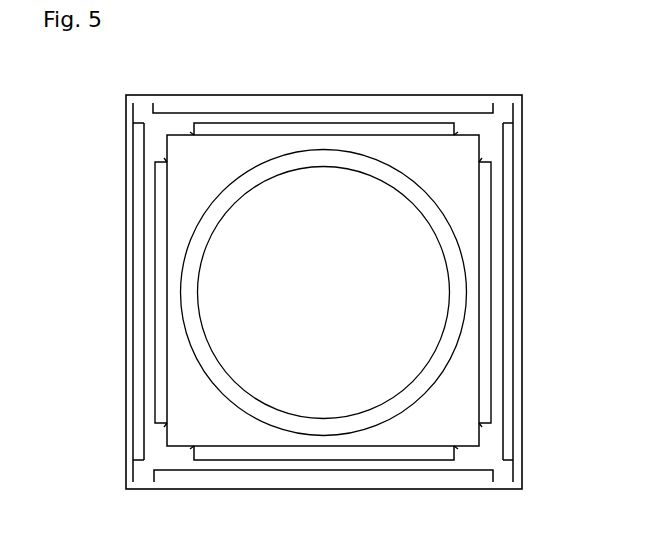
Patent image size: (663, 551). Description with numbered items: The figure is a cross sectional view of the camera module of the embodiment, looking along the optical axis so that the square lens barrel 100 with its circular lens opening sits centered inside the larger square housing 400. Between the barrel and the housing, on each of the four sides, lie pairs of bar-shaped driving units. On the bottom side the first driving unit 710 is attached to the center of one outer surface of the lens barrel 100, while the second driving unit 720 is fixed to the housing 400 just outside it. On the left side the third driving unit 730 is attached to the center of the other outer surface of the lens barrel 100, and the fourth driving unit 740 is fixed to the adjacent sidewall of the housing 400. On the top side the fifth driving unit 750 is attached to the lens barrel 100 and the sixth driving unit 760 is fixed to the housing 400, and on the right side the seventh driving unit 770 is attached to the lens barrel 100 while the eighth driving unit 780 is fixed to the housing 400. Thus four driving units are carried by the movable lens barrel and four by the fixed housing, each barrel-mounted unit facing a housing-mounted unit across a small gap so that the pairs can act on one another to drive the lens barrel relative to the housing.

The lens barrel 100 is at (218, 442).
The housing 400 is at (128, 402).
The first driving unit 710 is at (381, 455).
The second driving unit 720 is at (310, 477).
The third driving unit 730 is at (158, 330).
The fourth driving unit 740 is at (138, 260).
The fifth driving unit 750 is at (382, 128).
The sixth driving unit 760 is at (288, 106).
The seventh driving unit 770 is at (488, 287).
The eighth driving unit 780 is at (510, 224).